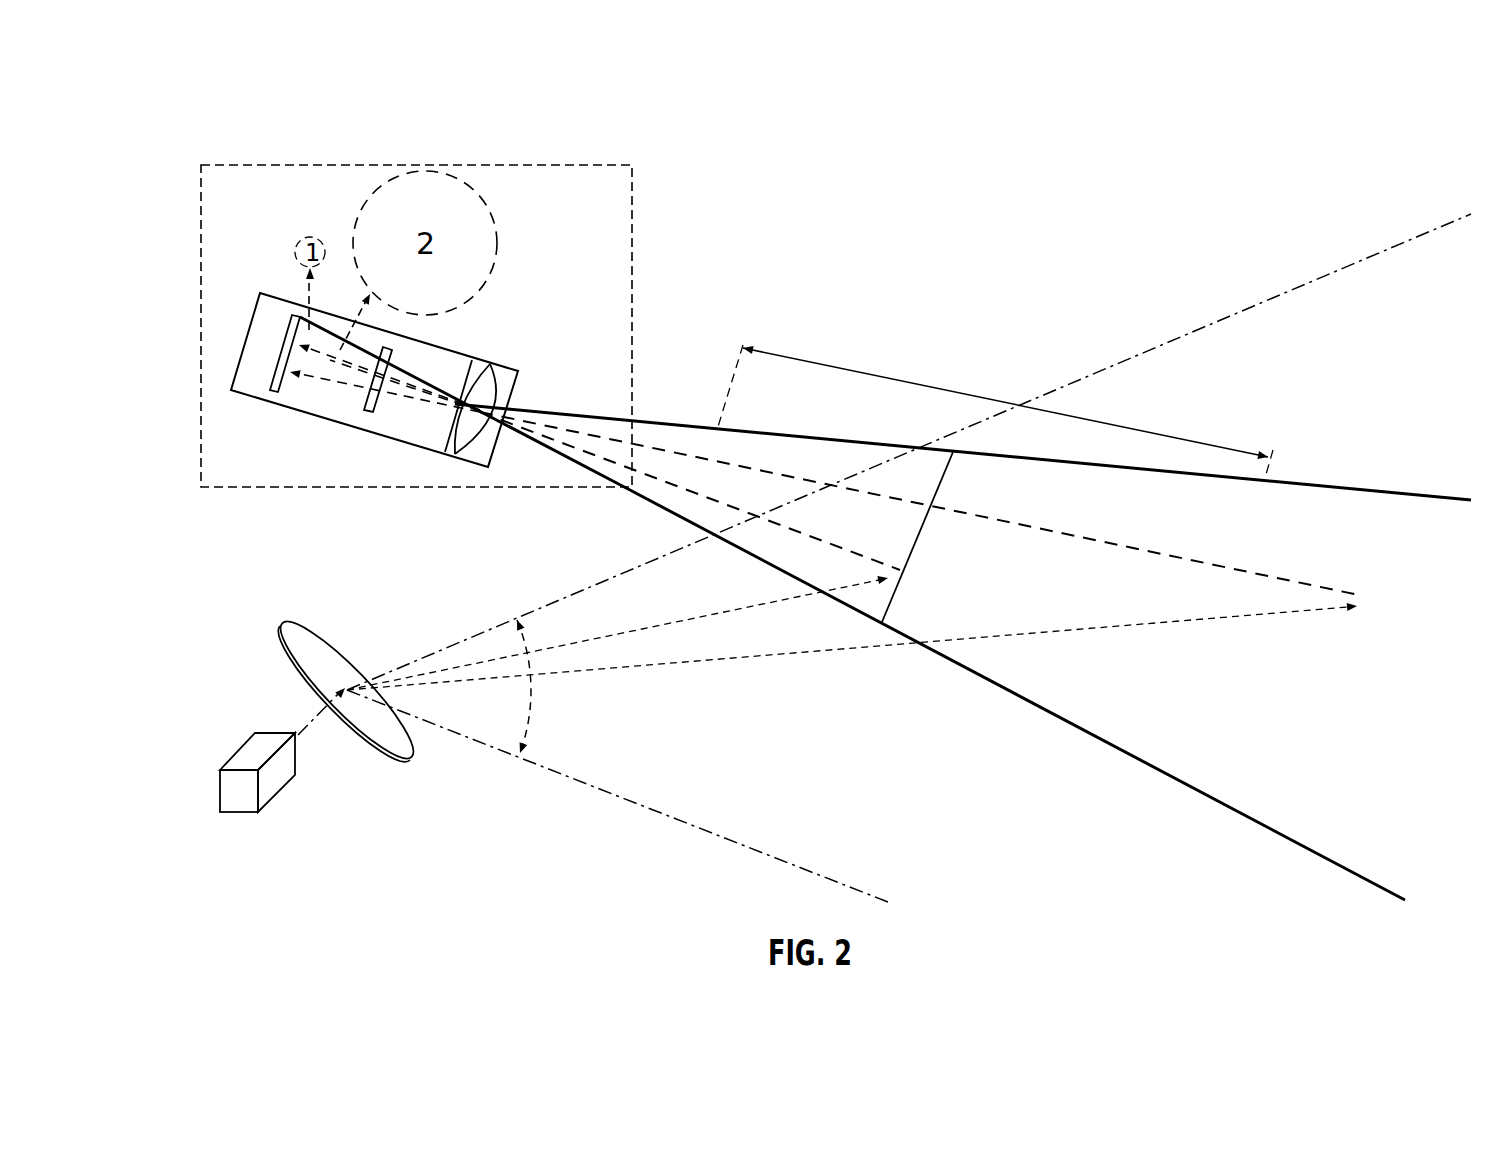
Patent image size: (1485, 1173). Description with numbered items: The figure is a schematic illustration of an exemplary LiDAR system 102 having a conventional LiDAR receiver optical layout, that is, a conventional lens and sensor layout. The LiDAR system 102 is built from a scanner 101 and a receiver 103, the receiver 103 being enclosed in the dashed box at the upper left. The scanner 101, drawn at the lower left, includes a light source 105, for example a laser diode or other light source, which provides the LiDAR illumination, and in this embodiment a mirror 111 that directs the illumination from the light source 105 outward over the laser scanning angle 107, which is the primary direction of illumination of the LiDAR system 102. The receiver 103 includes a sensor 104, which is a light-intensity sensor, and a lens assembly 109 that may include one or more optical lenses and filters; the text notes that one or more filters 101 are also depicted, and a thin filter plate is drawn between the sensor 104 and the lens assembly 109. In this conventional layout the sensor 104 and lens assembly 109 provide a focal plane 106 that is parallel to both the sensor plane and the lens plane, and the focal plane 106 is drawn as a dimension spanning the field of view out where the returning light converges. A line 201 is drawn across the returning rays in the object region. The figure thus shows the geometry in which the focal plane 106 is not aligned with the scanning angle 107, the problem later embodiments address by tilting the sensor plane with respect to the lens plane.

The scanner 101 is at (387, 346).
The LiDAR system 102 is at (176, 120).
The receiver 103 is at (217, 195).
The sensor 104 is at (283, 352).
The light source 105 is at (280, 793).
The focal plane 106 is at (977, 394).
The scanning angle 107 is at (533, 693).
The lens assembly 109 is at (497, 392).
The mirror 111 is at (327, 640).
The object plane 201 is at (944, 474).